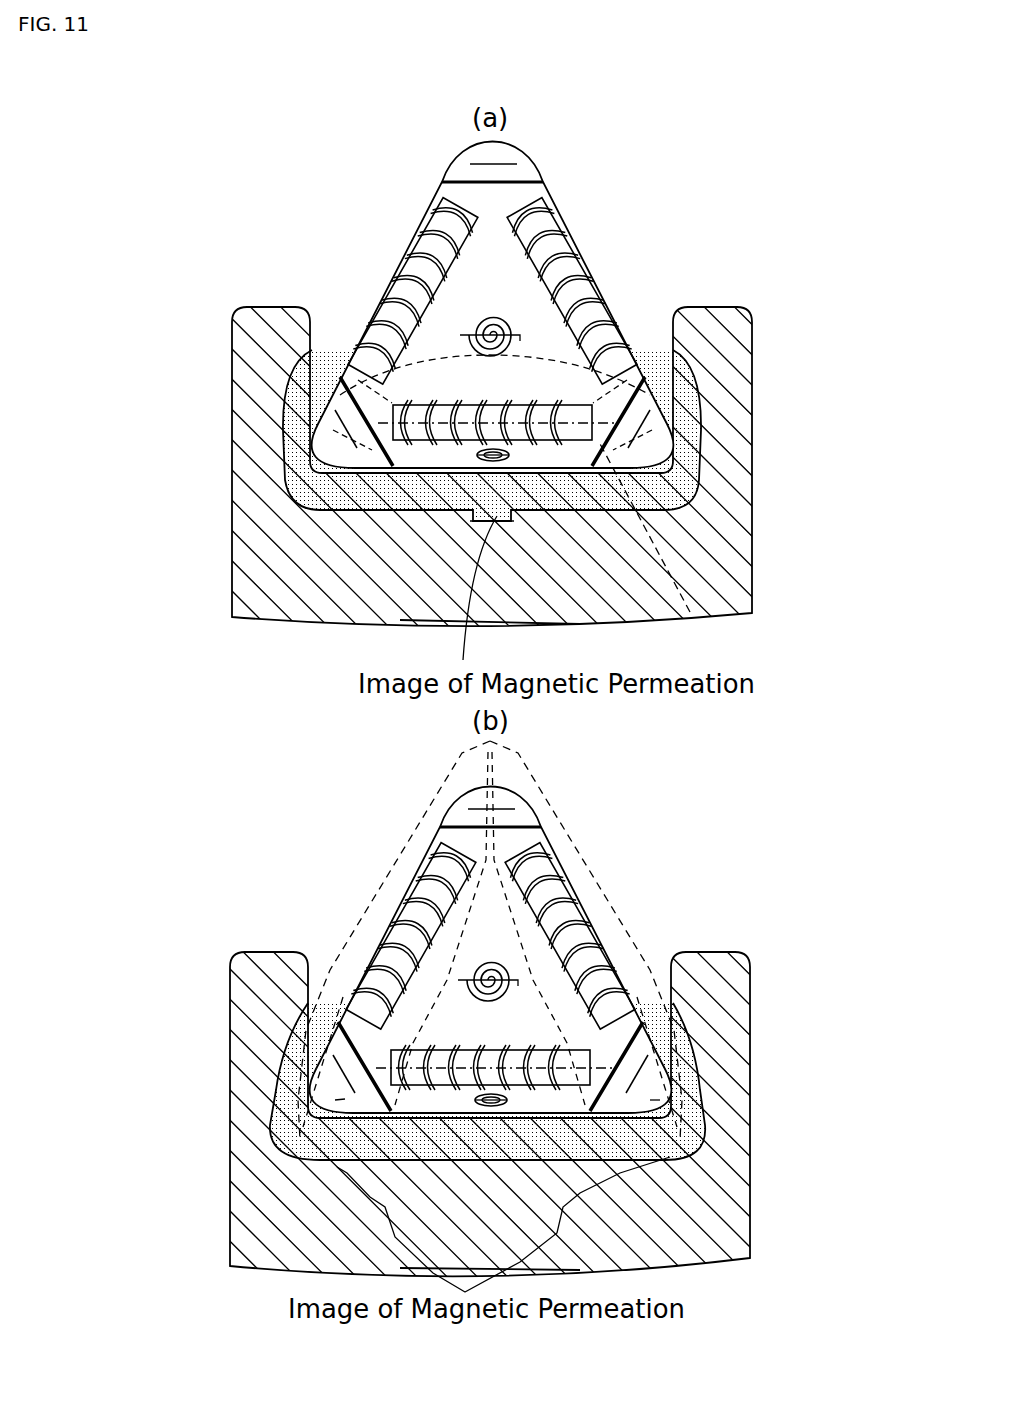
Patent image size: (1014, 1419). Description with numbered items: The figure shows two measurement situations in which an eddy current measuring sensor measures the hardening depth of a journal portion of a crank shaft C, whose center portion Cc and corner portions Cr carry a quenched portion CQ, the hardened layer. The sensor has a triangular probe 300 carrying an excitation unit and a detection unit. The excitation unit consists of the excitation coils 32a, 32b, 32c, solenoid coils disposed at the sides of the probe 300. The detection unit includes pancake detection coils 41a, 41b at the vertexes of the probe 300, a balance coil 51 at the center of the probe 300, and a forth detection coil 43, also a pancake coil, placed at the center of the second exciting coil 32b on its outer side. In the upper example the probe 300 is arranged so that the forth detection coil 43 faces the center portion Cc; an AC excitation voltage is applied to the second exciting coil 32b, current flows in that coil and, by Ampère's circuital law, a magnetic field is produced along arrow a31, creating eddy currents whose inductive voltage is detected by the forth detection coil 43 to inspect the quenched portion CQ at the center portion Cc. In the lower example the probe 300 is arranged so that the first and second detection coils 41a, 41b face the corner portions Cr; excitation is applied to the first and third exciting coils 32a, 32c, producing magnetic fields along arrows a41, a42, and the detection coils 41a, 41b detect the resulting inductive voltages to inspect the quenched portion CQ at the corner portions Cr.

The probe 300 is at (596, 187).
The balance coil 51 is at (486, 314).
The first exciting coil 32a is at (575, 905).
The second exciting coil 32b is at (437, 393).
The third exciting coil 32c is at (432, 893).
The forth detection coil 43 is at (497, 462).
The first detection coil 41a is at (645, 1074).
The second detection coil 41b is at (342, 1080).
The arrow indicating magnetic field direction in second exciting coil a31 is at (668, 547).
The arrow indicating magnetic field direction in first exciting coil a41 is at (660, 1100).
The arrow indicating magnetic field direction in third exciting coil a42 is at (335, 1100).
The crank shaft C is at (278, 330).
The corner portions Cr is at (290, 494).
The quenched portion CQ is at (360, 495).
The center portion Cc is at (550, 540).